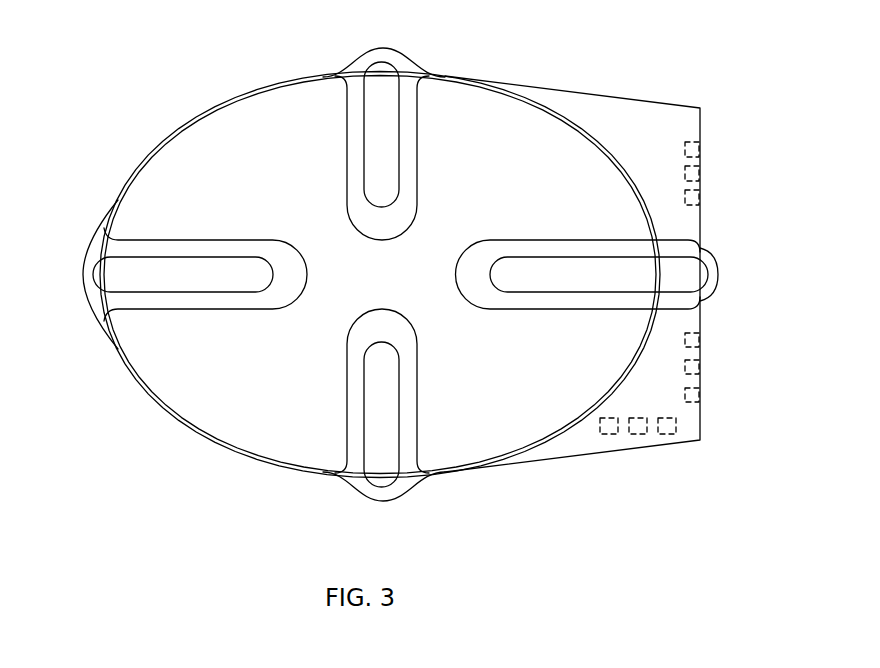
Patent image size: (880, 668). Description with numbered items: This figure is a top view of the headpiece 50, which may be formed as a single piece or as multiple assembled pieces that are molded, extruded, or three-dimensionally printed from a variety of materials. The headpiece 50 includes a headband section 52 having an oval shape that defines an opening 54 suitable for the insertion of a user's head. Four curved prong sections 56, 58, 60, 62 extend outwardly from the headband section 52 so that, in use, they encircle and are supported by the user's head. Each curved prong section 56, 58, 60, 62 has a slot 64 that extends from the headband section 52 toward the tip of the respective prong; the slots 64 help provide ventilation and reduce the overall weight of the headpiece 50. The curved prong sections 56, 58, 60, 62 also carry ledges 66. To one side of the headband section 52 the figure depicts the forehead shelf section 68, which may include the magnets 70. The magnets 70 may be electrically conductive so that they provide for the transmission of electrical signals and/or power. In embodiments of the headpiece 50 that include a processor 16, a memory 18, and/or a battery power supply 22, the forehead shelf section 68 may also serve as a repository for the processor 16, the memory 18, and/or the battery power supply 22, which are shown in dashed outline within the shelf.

The processor 16 is at (609, 435).
The memory 18 is at (638, 435).
The battery power supply 22 is at (667, 435).
The headpiece 50 is at (664, 481).
The headband section 52 is at (557, 104).
The opening 54 is at (398, 285).
The curved prong section 56 is at (357, 462).
The curved prong section 58 is at (199, 248).
The curved prong section 60 is at (408, 181).
The curved prong section 62 is at (562, 246).
The slot 64 is at (380, 150).
The ledges 66 is at (384, 57).
The forehead shelf section 68 is at (642, 115).
The magnets 70 is at (700, 150).